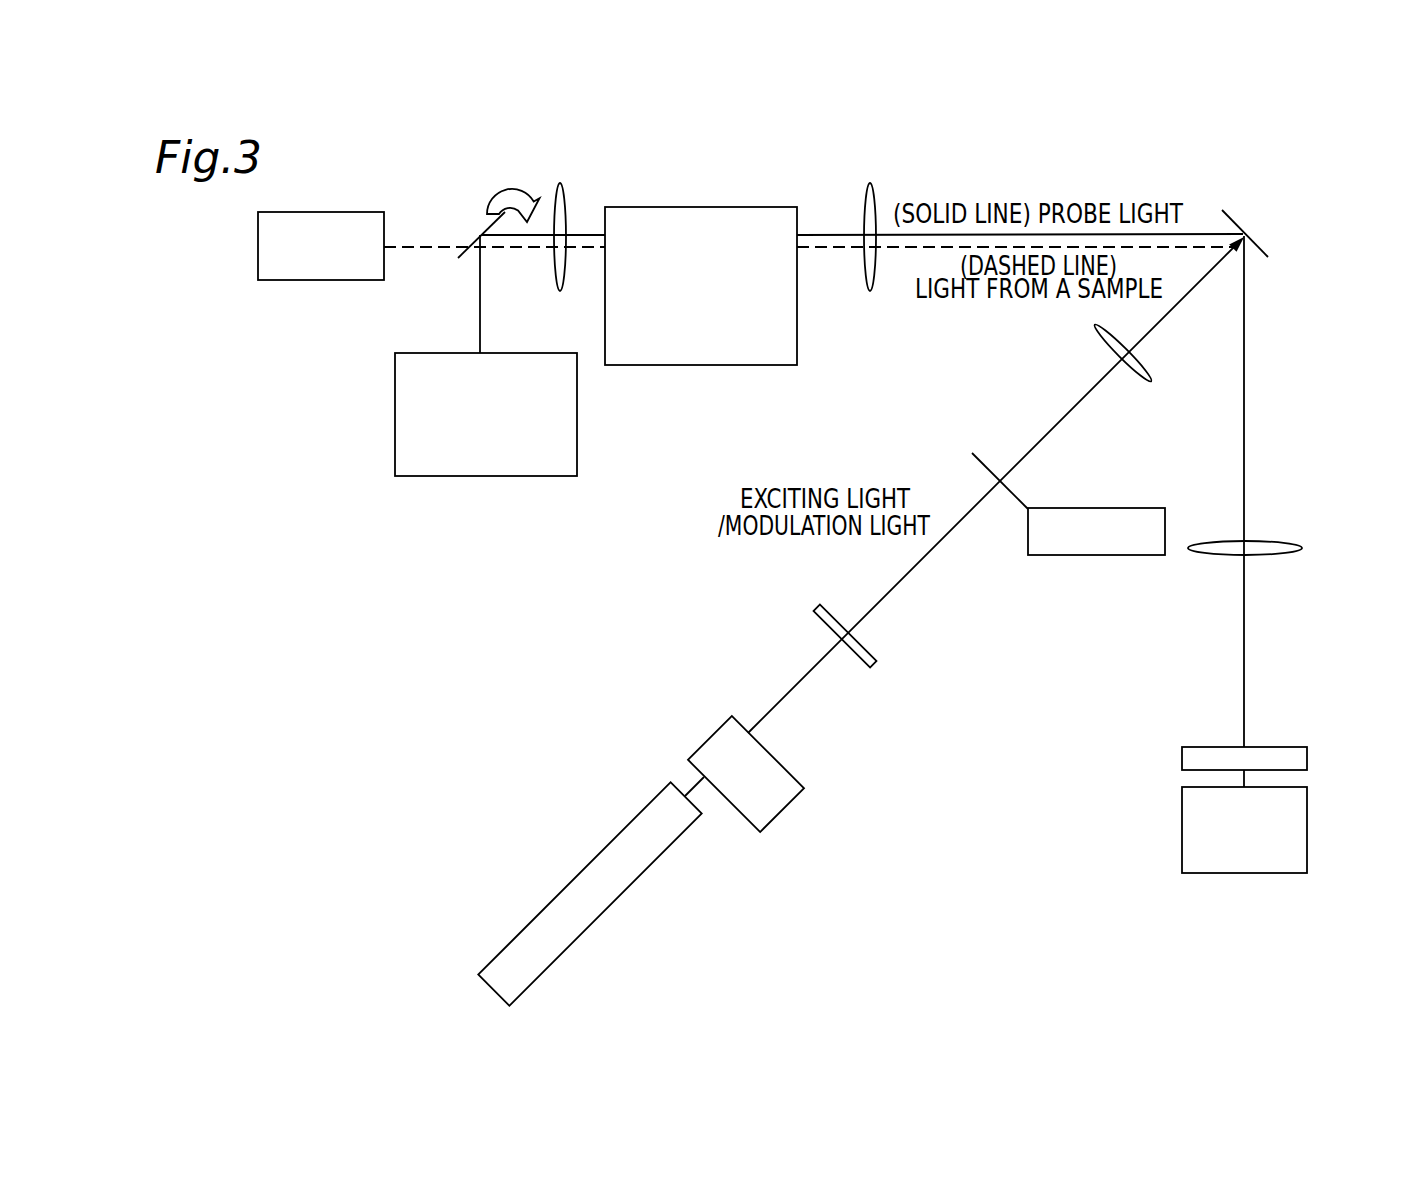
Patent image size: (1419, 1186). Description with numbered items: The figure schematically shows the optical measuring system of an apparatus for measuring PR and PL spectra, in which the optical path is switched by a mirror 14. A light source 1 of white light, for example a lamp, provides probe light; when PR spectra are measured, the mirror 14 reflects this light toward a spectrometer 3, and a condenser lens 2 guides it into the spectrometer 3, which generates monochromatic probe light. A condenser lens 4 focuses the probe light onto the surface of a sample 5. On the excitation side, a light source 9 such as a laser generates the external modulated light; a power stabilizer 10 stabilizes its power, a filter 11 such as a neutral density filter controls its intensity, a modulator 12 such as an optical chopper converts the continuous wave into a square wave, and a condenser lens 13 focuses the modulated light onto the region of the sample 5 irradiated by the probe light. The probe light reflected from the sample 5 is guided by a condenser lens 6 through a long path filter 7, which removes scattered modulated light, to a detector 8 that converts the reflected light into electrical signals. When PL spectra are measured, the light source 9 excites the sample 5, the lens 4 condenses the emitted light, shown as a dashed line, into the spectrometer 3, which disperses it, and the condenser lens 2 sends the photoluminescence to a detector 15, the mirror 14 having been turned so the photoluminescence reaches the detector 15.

The light source 1 is at (540, 478).
The condenser lens 2 is at (562, 186).
The spectrometer 3 is at (727, 366).
The condenser lens 4 is at (872, 186).
The sample 5 is at (1257, 242).
The condenser lens 6 is at (1262, 556).
The long path filter 7 is at (1307, 757).
The detector 8 is at (1307, 830).
The light source for excitation light 9 is at (627, 887).
The power stabilizer 10 is at (790, 805).
The filter 11 is at (875, 665).
The modulator 12 is at (1063, 557).
The condenser lens 13 is at (1152, 382).
The mirror 14 is at (485, 232).
The detector 15 is at (333, 282).